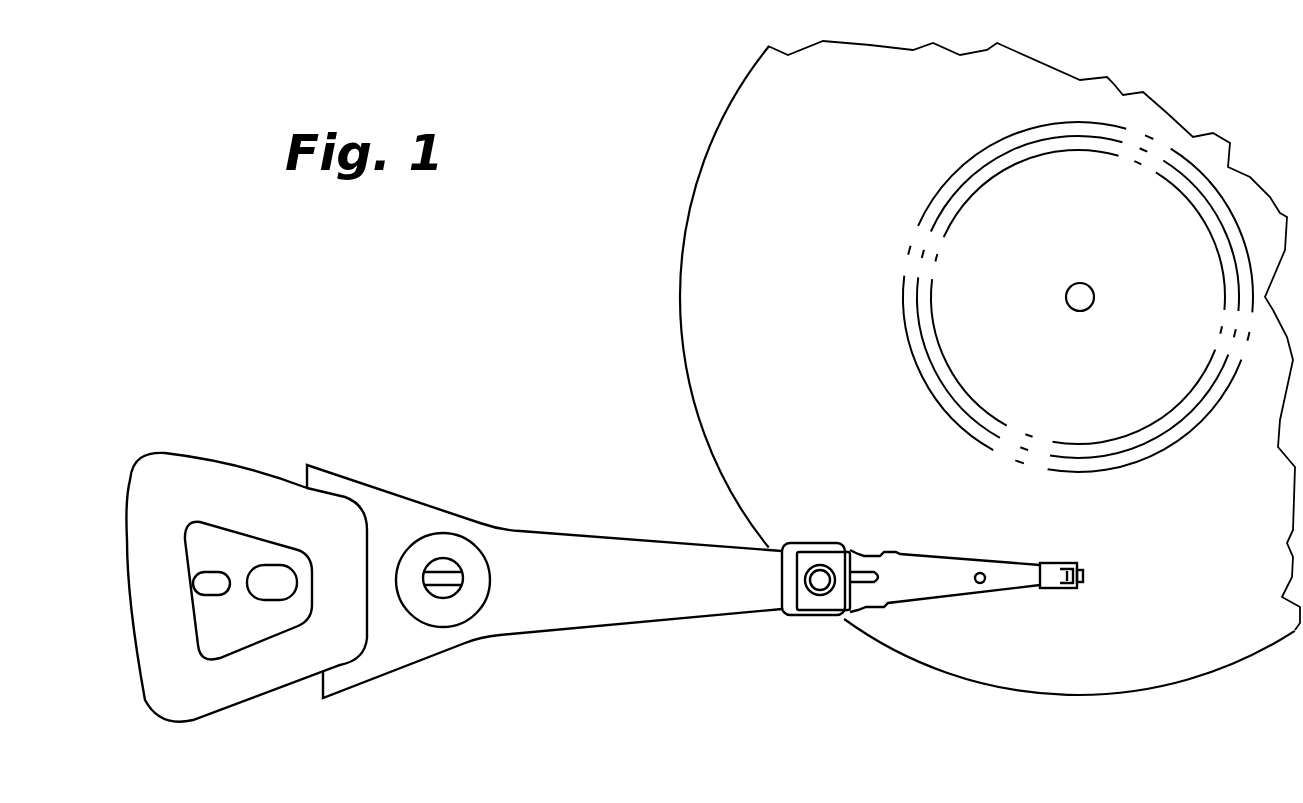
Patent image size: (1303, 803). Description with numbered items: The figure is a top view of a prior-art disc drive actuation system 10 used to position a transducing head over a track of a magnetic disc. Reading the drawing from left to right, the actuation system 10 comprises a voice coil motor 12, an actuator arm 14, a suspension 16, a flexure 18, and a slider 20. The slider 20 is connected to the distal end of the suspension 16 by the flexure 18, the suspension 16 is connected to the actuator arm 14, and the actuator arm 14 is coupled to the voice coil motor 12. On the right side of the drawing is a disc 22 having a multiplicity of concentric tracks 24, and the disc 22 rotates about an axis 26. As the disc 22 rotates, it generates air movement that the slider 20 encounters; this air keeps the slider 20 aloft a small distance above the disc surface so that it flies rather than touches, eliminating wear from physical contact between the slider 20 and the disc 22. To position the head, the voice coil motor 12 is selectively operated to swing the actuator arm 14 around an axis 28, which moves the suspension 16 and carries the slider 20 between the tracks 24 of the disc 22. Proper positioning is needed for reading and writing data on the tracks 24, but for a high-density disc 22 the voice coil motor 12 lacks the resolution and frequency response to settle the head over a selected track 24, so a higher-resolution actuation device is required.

The disc drive actuation system 10 is at (498, 471).
The voice coil motor 12 is at (152, 452).
The actuator arm 14 is at (582, 533).
The suspension 16 is at (937, 555).
The flexure 18 is at (1060, 563).
The slider 20 is at (1083, 575).
The disc 22 is at (680, 322).
The tracks 24 is at (927, 342).
The axis 26 is at (1069, 288).
The axis 28 is at (455, 585).